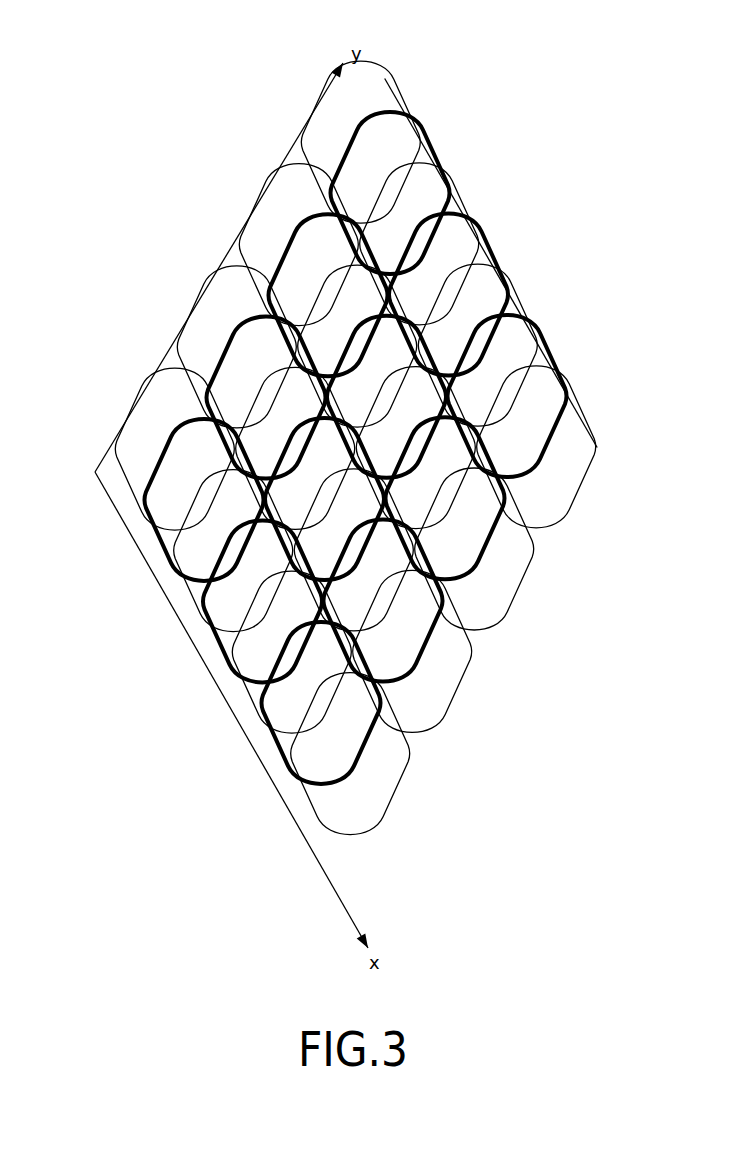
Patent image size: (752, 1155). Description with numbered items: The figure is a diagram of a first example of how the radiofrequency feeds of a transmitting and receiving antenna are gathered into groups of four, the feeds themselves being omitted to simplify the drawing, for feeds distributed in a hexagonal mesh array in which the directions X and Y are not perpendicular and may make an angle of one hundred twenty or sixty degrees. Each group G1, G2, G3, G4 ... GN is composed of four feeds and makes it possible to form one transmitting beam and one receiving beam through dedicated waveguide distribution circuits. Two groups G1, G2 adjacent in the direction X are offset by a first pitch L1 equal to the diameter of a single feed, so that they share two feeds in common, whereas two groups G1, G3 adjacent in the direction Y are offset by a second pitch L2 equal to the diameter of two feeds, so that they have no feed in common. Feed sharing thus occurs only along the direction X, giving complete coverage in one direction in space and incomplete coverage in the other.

The group of four feeds G1 is at (378, 105).
The group of four feeds G2 is at (430, 177).
The group of four feeds G3 is at (255, 235).
The group of four feeds G4 is at (283, 280).
The group of four feeds GN is at (393, 822).
The first pitch L1 is at (162, 485).
The second pitch L2 is at (197, 410).